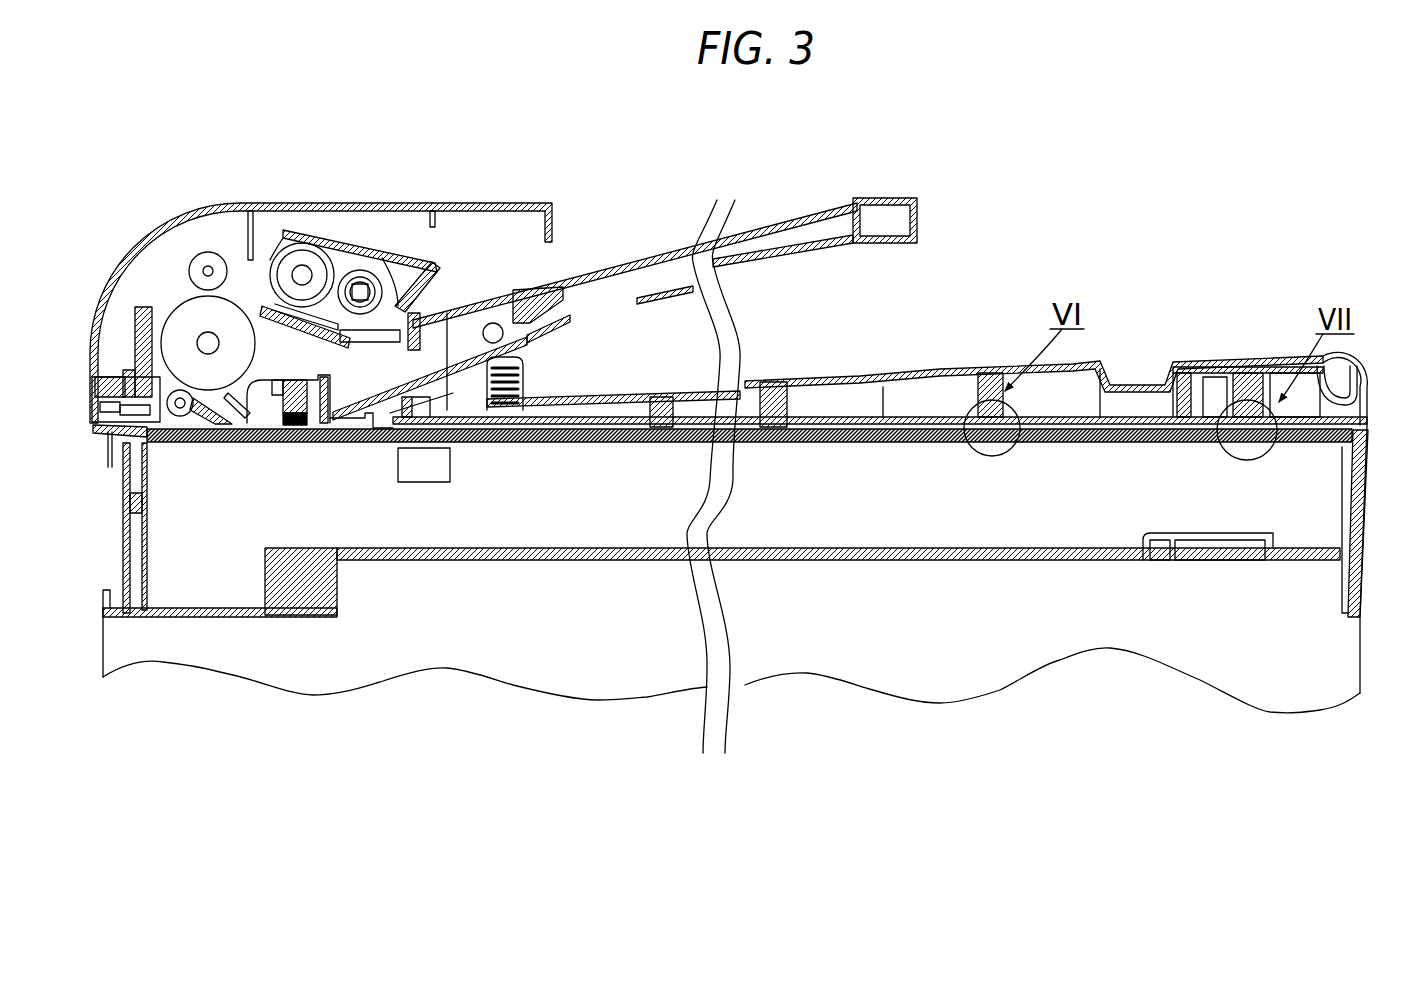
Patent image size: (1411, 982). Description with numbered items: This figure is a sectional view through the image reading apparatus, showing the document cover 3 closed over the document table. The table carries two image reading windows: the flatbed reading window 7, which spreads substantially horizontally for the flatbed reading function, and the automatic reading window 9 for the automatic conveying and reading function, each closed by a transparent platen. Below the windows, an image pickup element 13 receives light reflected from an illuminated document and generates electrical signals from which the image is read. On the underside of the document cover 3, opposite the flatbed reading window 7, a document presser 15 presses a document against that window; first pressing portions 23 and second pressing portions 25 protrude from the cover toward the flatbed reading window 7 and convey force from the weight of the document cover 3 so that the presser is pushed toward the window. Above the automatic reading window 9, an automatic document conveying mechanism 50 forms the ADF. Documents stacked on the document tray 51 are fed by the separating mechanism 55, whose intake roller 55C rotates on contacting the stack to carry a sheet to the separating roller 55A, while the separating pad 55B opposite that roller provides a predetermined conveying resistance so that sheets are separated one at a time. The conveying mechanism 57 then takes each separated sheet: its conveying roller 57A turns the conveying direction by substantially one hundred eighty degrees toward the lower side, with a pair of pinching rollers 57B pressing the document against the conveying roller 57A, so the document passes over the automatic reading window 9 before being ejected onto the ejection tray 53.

The document cover 3 is at (1372, 388).
The flatbed reading window 7 is at (903, 443).
The automatic reading window 9 is at (213, 447).
The image pickup element 13 is at (397, 463).
The document presser 15 is at (870, 443).
The first pressing portions 23 is at (1245, 380).
The second pressing portions 25 is at (667, 417).
The automatic document conveying mechanism 50 is at (316, 200).
The document tray 51 is at (635, 260).
The ejection tray 53 is at (923, 360).
The separating mechanism 55 is at (360, 226).
The separating roller 55A is at (313, 260).
The separating pad 55B is at (275, 285).
The intake roller 55C is at (387, 278).
The conveying mechanism 57 is at (163, 290).
The conveying roller 57A is at (190, 318).
The pinching rollers 57B is at (208, 266).